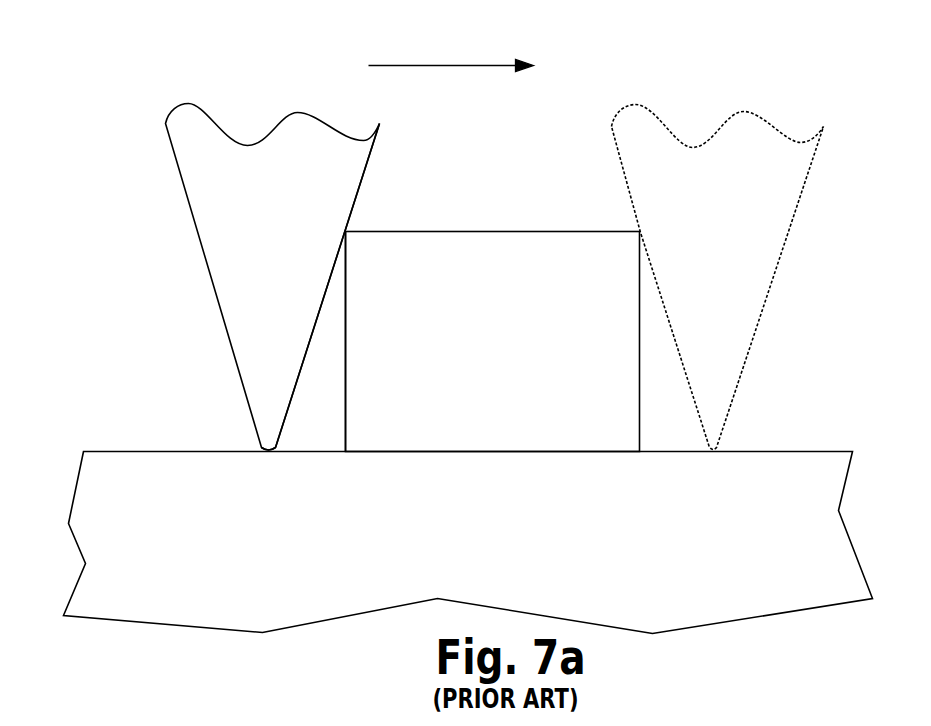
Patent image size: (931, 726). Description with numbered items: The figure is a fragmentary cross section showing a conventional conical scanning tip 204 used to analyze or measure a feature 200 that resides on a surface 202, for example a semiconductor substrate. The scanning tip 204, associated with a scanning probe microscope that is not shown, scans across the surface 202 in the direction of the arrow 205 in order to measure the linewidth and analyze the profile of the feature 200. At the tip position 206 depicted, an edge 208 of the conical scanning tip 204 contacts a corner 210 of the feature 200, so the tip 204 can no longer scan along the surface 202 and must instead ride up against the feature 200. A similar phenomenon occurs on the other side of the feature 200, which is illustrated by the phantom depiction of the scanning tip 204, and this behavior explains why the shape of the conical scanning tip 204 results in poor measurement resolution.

The feature 200 is at (509, 198).
The surface 202 is at (135, 449).
The conical scanning tip 204 is at (370, 153).
The arrow 205 is at (465, 65).
The tip position 206 is at (271, 474).
The edge 208 is at (338, 214).
The corner 210 is at (378, 247).